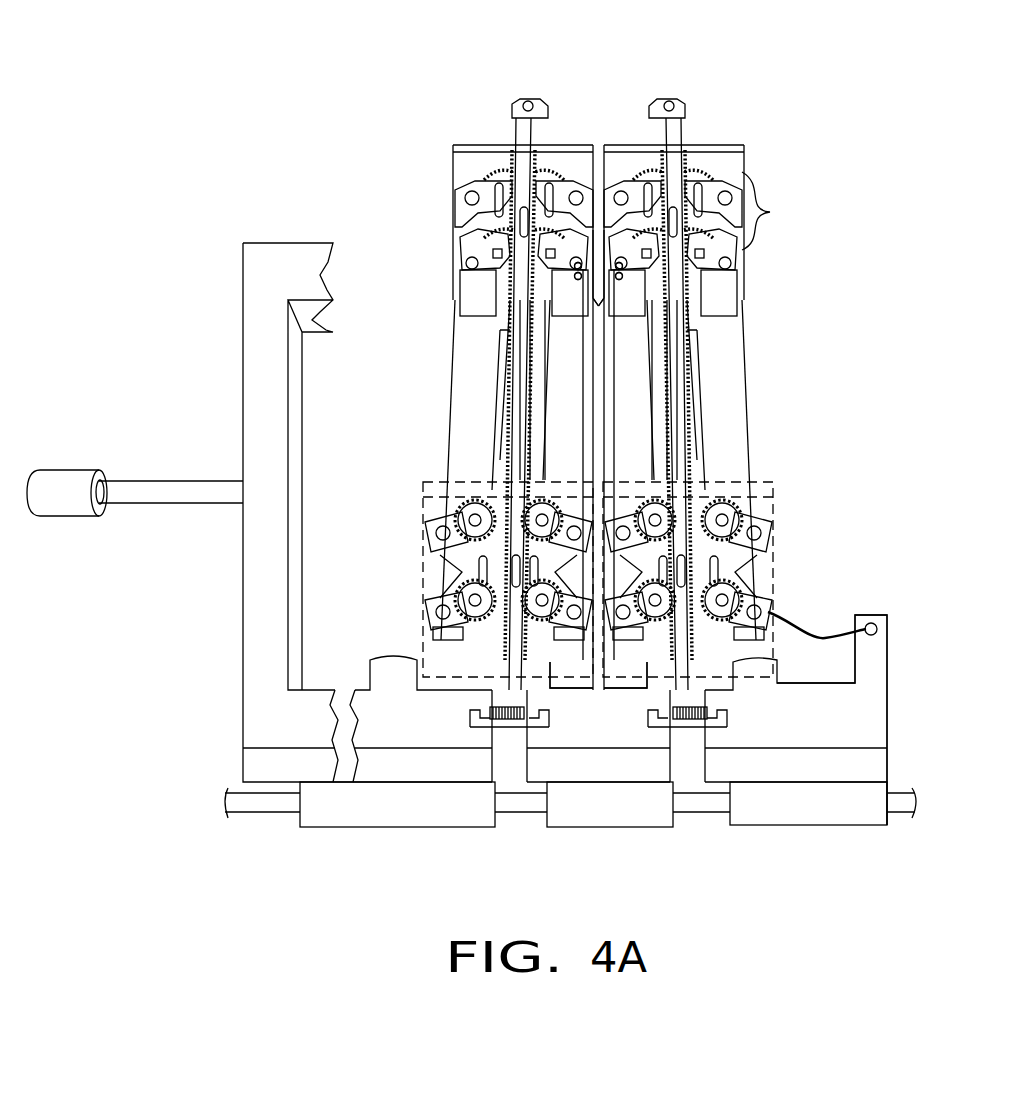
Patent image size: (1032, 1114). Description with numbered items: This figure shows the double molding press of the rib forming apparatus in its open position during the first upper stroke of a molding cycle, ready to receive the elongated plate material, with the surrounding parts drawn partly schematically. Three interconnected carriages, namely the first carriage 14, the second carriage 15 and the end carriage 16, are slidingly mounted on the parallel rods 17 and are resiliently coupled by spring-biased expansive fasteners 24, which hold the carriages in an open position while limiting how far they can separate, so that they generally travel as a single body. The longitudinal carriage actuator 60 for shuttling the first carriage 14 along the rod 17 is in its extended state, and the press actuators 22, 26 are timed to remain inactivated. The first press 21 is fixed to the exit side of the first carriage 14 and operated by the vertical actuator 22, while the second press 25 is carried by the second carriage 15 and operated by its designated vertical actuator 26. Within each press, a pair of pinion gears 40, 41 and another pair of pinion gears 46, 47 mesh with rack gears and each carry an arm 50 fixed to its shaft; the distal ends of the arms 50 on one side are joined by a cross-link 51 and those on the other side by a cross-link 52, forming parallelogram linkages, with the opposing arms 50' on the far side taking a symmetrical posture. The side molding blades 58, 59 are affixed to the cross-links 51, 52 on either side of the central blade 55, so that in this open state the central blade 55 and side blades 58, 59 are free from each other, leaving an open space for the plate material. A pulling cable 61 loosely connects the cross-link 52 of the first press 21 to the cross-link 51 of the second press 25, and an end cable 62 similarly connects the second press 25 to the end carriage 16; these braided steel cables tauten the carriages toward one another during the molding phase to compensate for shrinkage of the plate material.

The first carriage 14 is at (436, 775).
The second carriage 15 is at (623, 770).
The end carriage 16 is at (812, 772).
The parallel rods 17 is at (268, 812).
The first press 21 is at (425, 548).
The vertical actuator 22 is at (518, 116).
The spring-biased expansive fasteners 24 is at (512, 722).
The second press 25 is at (790, 512).
The vertical actuator 26 is at (680, 108).
The pinion gear 40 is at (492, 165).
The pinion gear 41 is at (470, 233).
The pinion gear 46 is at (553, 178).
The pinion gear 47 is at (578, 288).
The arm 50 is at (494, 365).
The clamp arm 50' is at (686, 336).
The cross-link 51 is at (462, 221).
The cross-link 52 is at (578, 190).
The central blade 55 is at (520, 378).
The side molding blade 58 is at (455, 333).
The side molding blade 59 is at (545, 427).
The longitudinal carriage actuator 60 is at (73, 470).
The pulling cable 61 is at (610, 648).
The end cable 62 is at (820, 645).